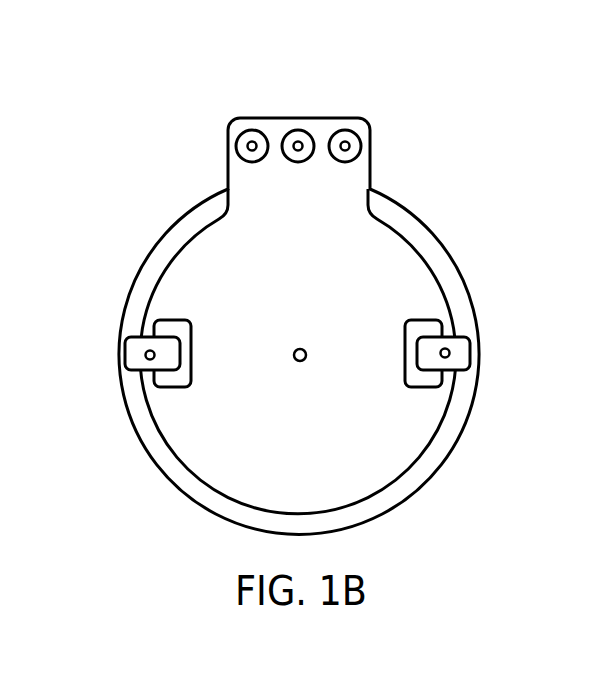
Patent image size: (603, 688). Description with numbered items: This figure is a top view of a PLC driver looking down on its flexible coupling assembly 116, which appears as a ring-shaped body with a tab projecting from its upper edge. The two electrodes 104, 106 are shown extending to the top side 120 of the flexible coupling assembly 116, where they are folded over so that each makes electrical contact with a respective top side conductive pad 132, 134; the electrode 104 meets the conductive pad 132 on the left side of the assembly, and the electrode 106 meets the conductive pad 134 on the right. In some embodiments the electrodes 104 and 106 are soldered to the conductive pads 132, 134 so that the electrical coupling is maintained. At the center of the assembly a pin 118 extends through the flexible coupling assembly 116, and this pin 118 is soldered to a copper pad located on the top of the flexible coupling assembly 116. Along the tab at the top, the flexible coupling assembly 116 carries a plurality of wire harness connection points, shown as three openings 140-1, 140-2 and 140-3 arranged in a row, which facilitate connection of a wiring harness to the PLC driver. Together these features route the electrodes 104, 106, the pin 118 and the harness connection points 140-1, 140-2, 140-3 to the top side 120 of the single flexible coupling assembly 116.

The electrode 104 is at (125, 354).
The electrode 106 is at (472, 362).
The flexible coupling assembly 116 is at (400, 257).
The pin 118 is at (299, 362).
The top side 120 is at (323, 307).
The top side conductive pad 132 is at (148, 313).
The top side conductive pad 134 is at (452, 325).
The wire harness connection point 140-1 is at (243, 128).
The wire harness connection point 140-2 is at (296, 128).
The wire harness connection point 140-3 is at (357, 128).